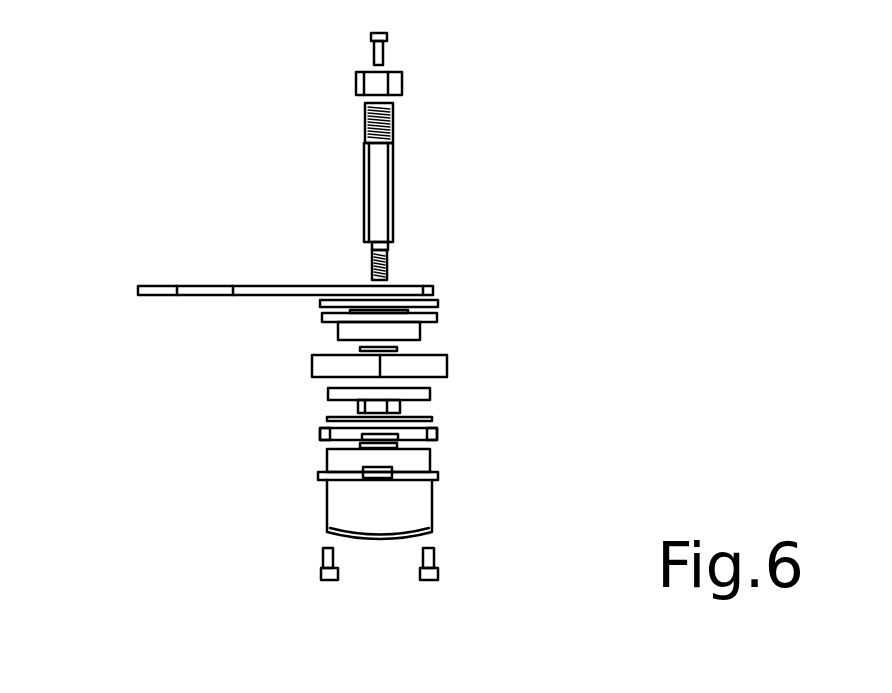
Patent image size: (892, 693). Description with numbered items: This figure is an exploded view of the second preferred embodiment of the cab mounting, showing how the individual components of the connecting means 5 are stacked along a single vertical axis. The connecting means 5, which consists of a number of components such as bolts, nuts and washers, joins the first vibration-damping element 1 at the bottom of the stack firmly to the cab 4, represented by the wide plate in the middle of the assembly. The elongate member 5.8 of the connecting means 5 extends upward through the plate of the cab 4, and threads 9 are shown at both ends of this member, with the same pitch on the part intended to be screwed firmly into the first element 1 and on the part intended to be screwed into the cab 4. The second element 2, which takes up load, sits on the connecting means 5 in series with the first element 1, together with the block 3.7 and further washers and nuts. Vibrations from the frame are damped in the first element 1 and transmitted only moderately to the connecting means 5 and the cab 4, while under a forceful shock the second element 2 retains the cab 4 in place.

The first vibration-damping element 1 is at (415, 512).
The second element 2 is at (430, 393).
The block 3.7 is at (437, 364).
The cab 4 is at (198, 287).
The connecting means 5 is at (402, 80).
The shaft 5.8 is at (383, 173).
The threads 9 is at (362, 115).